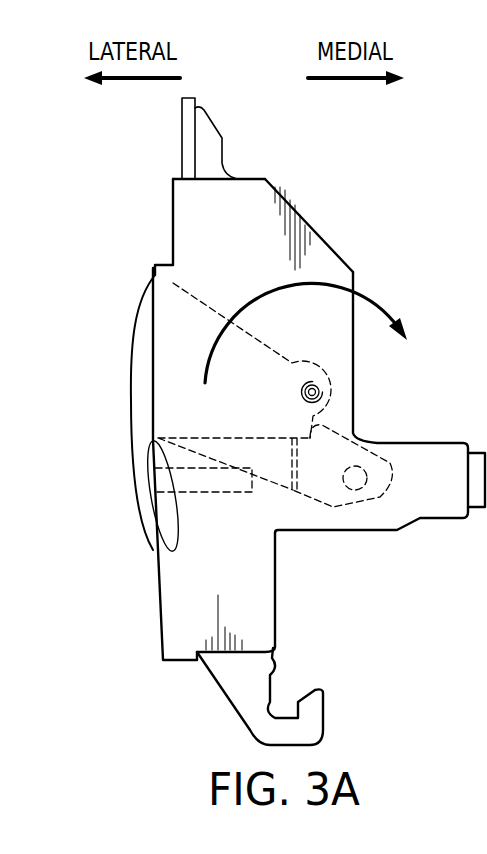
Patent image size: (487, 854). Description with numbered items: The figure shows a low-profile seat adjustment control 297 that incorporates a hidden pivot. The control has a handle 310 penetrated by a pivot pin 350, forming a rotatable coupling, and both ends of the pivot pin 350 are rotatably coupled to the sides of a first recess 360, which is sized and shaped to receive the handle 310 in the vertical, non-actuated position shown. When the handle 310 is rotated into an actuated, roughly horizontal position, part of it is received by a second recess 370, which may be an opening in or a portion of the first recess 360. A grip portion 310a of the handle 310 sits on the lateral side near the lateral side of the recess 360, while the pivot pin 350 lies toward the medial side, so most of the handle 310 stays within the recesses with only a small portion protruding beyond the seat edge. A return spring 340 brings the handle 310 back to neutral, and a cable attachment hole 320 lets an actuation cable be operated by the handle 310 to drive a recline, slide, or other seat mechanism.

The low-profile seat adjustment control 297 is at (118, 190).
The handle 310 is at (130, 388).
The grip portion 310a is at (145, 518).
The cable attachment hole 320 is at (378, 497).
The return spring 340 is at (285, 453).
The pivot pin 350 is at (320, 400).
The first recess 360 is at (265, 615).
The second recess 370 is at (328, 247).